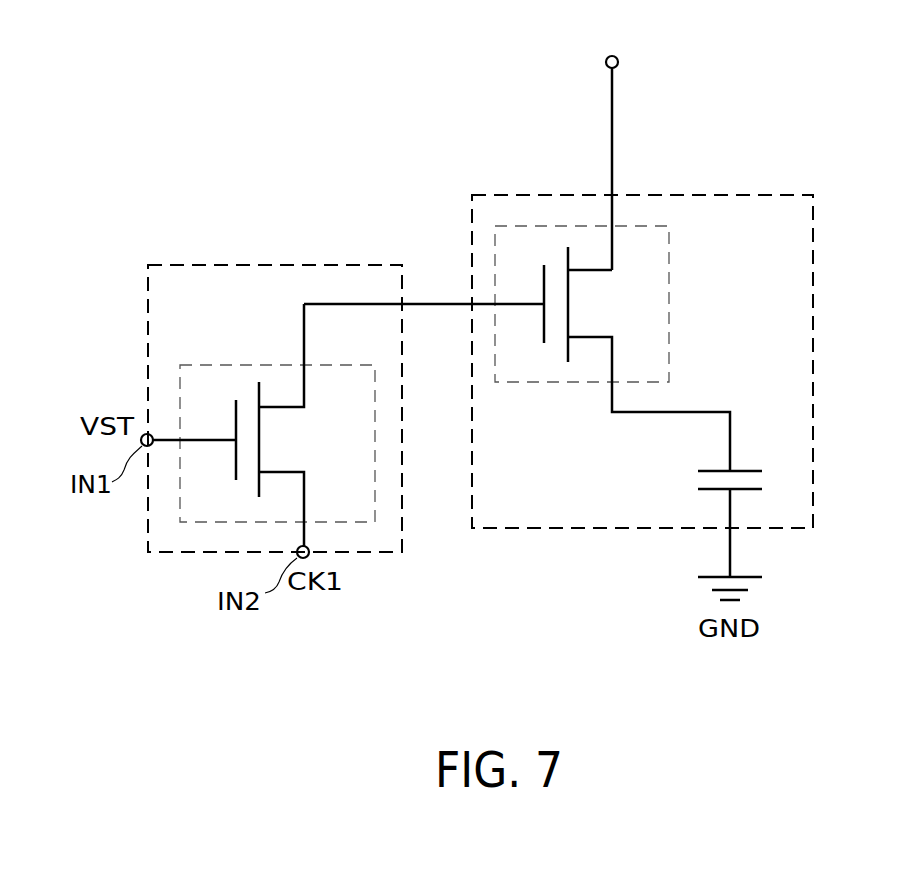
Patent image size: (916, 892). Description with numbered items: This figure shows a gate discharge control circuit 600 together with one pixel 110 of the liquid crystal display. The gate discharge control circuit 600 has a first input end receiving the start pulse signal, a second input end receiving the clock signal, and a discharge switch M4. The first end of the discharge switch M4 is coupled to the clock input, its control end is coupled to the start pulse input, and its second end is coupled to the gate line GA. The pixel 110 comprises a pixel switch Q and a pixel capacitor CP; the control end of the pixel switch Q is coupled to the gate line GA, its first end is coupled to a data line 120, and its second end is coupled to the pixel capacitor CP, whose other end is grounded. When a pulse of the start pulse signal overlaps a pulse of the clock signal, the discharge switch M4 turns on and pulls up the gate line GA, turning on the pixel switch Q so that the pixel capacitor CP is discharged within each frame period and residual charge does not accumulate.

The gate discharge control circuit 600 is at (254, 265).
The data line 120 is at (614, 136).
The pixel 110 is at (814, 303).
The discharge switch M4 is at (218, 364).
The pixel switch Q is at (670, 303).
The pixel capacitor CP is at (746, 480).
The gate line GA is at (430, 303).